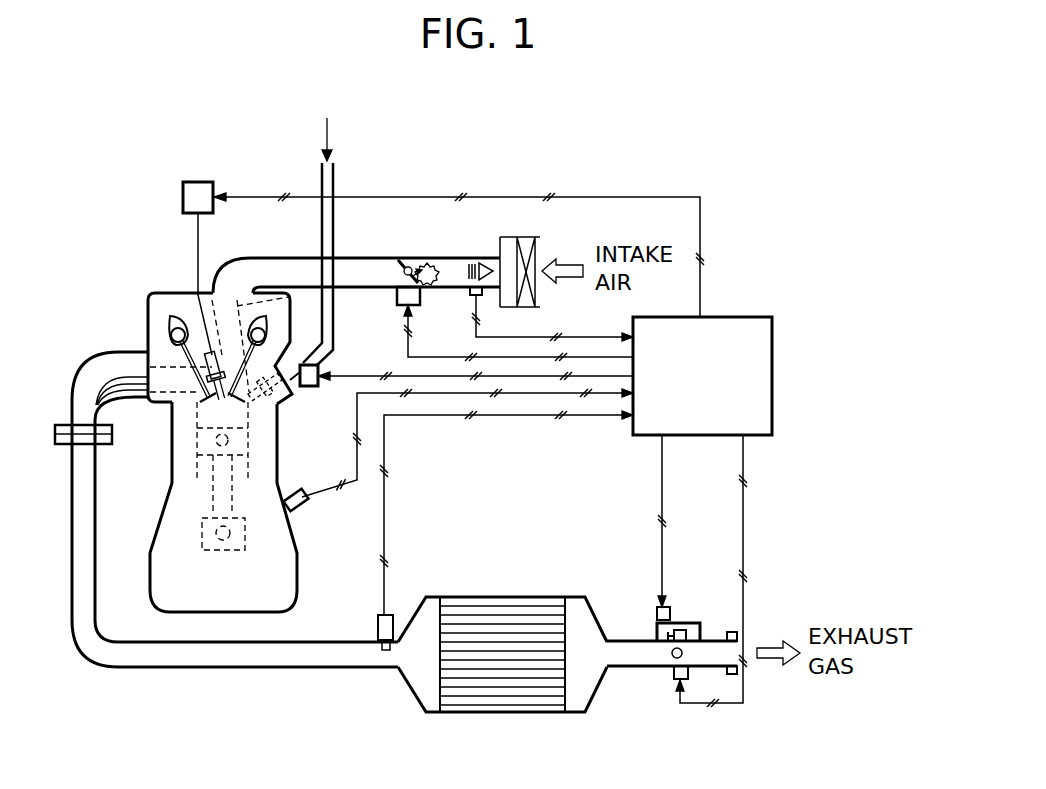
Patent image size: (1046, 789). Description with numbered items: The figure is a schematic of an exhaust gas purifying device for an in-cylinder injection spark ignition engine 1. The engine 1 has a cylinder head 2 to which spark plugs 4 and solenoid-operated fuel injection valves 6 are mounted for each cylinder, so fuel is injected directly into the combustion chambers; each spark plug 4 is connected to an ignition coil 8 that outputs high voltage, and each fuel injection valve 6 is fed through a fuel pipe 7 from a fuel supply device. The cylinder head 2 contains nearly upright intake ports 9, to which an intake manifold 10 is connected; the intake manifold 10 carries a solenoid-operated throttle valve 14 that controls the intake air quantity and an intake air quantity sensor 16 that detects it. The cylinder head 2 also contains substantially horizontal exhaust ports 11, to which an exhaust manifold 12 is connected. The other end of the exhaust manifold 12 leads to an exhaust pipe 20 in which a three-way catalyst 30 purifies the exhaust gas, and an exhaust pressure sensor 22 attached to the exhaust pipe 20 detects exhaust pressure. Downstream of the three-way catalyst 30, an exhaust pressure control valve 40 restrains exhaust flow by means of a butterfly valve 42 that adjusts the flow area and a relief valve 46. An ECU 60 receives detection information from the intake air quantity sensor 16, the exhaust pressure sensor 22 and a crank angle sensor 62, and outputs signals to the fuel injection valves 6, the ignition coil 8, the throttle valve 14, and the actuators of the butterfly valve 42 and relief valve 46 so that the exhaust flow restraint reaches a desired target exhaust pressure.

The engine body 1 is at (143, 290).
The cylinder head 2 is at (172, 291).
The spark plug 4 is at (205, 357).
The fuel injection valve 6 is at (303, 390).
The fuel supply pipe 7 is at (333, 178).
The ignition coil 8 is at (196, 180).
The intake port 9 is at (291, 299).
The intake manifold 10 is at (274, 257).
The exhaust port 11 is at (178, 408).
The exhaust manifold 12 is at (88, 352).
The throttle valve 14 is at (410, 262).
The intake air quantity sensor 16 is at (469, 292).
The exhaust pipe 20 is at (253, 669).
The exhaust pressure sensor 22 is at (378, 620).
The three-way catalyst 30 is at (497, 592).
The exhaust pressure control valve 40 is at (686, 584).
The butterfly valve 42 is at (690, 650).
The relief valve 46 is at (654, 602).
The ECU 60 is at (733, 317).
The crank angle sensor 62 is at (301, 512).